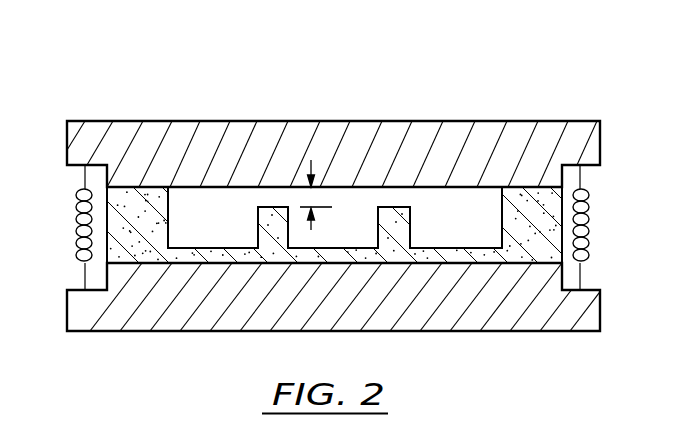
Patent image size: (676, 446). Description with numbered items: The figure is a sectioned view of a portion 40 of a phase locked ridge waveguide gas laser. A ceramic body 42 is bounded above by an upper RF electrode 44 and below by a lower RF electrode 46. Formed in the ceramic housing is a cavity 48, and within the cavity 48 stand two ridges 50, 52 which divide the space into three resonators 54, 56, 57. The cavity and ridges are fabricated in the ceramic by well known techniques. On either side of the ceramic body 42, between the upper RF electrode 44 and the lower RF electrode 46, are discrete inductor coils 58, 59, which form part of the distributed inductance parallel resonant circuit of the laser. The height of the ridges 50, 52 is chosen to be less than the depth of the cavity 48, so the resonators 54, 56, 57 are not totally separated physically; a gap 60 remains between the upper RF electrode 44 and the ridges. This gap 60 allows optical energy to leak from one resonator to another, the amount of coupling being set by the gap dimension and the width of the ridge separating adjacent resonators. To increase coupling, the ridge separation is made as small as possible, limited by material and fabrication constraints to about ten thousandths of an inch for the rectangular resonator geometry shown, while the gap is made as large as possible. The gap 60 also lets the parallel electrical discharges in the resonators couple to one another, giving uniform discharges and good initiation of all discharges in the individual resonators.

The portion of the phase locked ridge waveguide gas laser 40 is at (380, 66).
The ceramic body 42 is at (528, 258).
The upper RF electrode 44 is at (487, 121).
The lower RF electrode 46 is at (522, 331).
The cavity 48 is at (197, 211).
The ridge 50 is at (259, 217).
The ridge 52 is at (410, 212).
The resonator 54 is at (205, 244).
The resonator 56 is at (358, 244).
The resonator 57 is at (475, 240).
The discrete inductor coil 58 is at (76, 225).
The discrete inductor coil 59 is at (589, 227).
The gap 60 is at (312, 200).